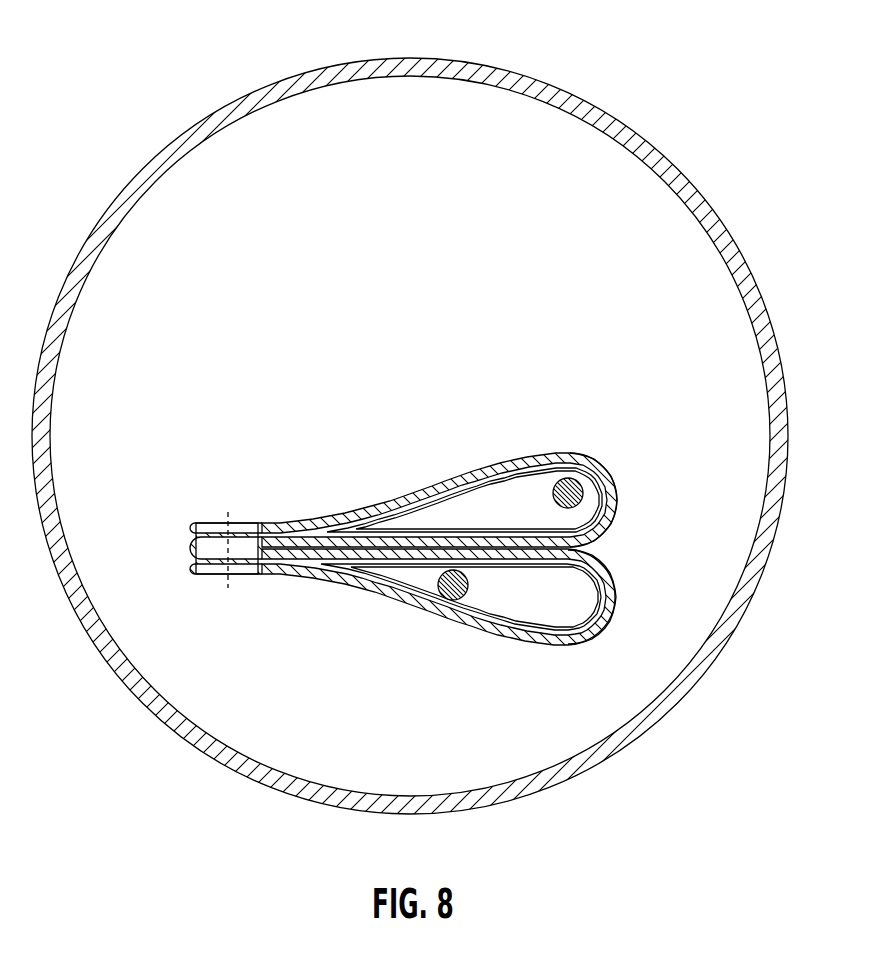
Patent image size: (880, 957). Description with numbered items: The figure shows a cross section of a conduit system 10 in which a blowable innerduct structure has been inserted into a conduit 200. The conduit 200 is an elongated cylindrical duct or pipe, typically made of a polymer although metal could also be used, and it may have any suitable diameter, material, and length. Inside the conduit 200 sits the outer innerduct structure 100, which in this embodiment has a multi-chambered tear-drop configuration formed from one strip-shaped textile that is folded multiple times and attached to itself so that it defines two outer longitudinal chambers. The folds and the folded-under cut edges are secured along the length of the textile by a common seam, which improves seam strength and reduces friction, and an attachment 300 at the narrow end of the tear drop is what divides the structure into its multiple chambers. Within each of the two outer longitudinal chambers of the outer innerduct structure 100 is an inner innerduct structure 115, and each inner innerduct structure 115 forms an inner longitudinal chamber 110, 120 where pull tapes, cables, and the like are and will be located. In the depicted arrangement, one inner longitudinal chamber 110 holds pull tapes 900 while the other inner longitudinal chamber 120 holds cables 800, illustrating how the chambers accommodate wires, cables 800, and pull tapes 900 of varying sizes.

The conduit system 10 is at (108, 96).
The outer innerduct structure 100 is at (500, 455).
The inner longitudinal chamber 110 is at (532, 517).
The inner innerduct structure 115 is at (606, 511).
The inner longitudinal chamber 120 is at (532, 611).
The conduit 200 is at (563, 88).
The attachment 300 is at (228, 522).
The cables 800 is at (441, 595).
The pull tapes 900 is at (581, 483).